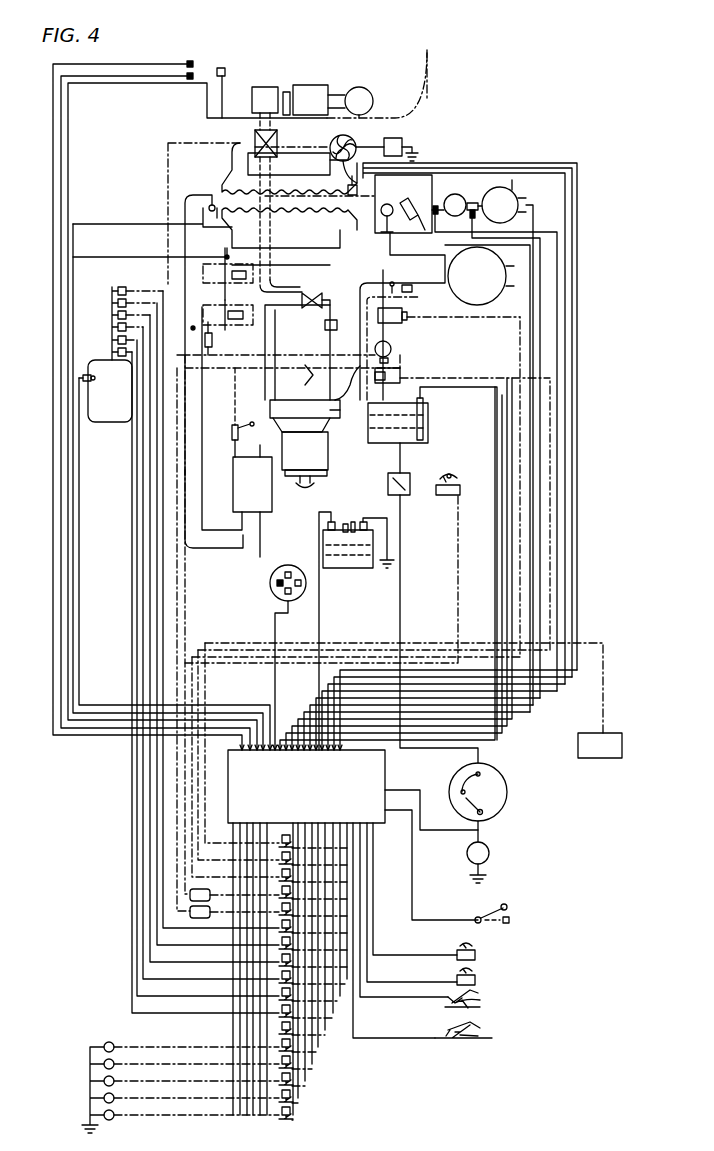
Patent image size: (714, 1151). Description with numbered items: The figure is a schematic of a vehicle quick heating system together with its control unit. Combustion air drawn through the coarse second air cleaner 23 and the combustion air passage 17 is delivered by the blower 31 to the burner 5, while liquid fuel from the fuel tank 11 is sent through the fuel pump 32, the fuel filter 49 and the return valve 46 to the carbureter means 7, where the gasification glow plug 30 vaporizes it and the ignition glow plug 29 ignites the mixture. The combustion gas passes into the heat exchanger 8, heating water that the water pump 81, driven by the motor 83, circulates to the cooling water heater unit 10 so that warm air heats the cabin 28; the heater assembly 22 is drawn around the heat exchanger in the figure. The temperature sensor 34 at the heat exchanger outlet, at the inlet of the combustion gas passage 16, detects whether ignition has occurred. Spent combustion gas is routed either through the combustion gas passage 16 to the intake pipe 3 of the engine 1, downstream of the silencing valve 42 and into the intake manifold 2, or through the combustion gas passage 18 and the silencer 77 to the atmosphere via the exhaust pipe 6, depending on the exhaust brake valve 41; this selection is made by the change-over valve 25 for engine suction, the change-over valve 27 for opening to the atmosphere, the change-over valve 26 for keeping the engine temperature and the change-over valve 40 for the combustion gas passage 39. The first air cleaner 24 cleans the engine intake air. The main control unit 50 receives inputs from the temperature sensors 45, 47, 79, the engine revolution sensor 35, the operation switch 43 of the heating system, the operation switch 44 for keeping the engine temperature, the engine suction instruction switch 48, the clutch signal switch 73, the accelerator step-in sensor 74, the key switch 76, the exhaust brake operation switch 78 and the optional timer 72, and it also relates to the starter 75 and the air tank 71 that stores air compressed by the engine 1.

The engine 1 is at (332, 414).
The intake manifold 2 is at (349, 384).
The intake pipe 3 is at (426, 284).
The burner 5 is at (400, 185).
The exhaust pipe 6 is at (262, 538).
The carbureter means 7 is at (452, 194).
The heat exchanger 8 is at (297, 185).
The cooling water heater unit 10 is at (265, 93).
The fuel tank 11 is at (426, 423).
The combustion gas passage 16 is at (185, 207).
The combustion air passage 17 is at (502, 189).
The combustion gas passage 18 is at (185, 473).
The cooling unit 22 is at (240, 165).
The second air cleaner 23 is at (519, 163).
The first air cleaner 24 is at (500, 262).
The change-over valve for engine suction 25 is at (226, 256).
The change-over valve for keeping the engine temperature 26 is at (192, 326).
The change-over valve for opening to the atmosphere 27 is at (155, 290).
The cabin 28 is at (440, 72).
The glow plug for ignition 29 is at (394, 207).
The glow plug for gasification 30 is at (416, 206).
The blower 31 is at (472, 203).
The fuel pump 32 is at (402, 372).
The temperature sensor 34 is at (211, 204).
The engine revolution sensor 35 is at (322, 425).
The combustion gas passage 39 is at (337, 186).
The change-over valve for the combustion gas passage 40 is at (300, 305).
The exhaust brake valve 41 is at (236, 442).
The silencing valve 42 is at (414, 284).
The operation switch 43 is at (447, 496).
The operation switch for keeping the engine temperature 44 is at (475, 955).
The temperature sensor 45 is at (326, 327).
The return valve 46 is at (393, 321).
The temperature sensor 47 is at (213, 342).
The engine suction instruction switch 48 is at (475, 980).
The fuel filter 49 is at (375, 349).
The main control unit 50 is at (382, 773).
The air tank 71 is at (108, 422).
The timer 72 is at (270, 585).
The clutch signal switch 73 is at (480, 1003).
The accelerator step-in sensor 74 is at (488, 1030).
The starter 75 is at (490, 850).
The key switch 76 is at (507, 788).
The silencer 77 is at (243, 490).
The exhaust brake operation switch 78 is at (510, 919).
The temperature sensor 79 is at (222, 82).
The water pump 81 is at (340, 135).
The motor 83 is at (393, 136).